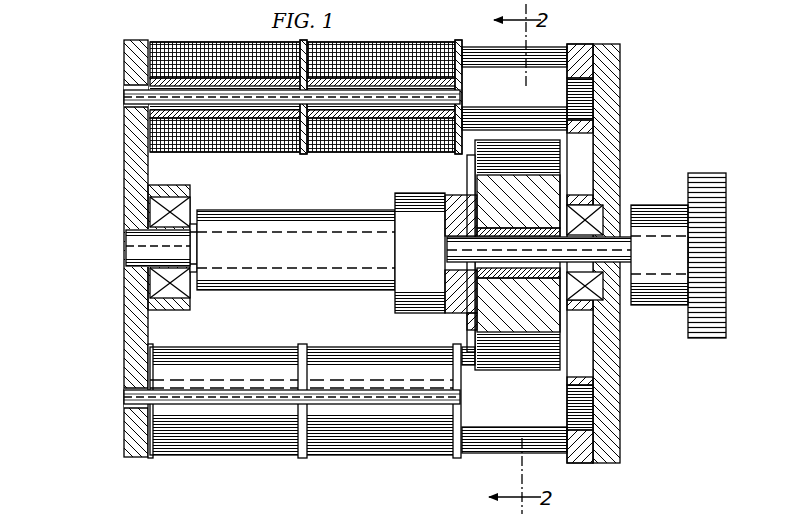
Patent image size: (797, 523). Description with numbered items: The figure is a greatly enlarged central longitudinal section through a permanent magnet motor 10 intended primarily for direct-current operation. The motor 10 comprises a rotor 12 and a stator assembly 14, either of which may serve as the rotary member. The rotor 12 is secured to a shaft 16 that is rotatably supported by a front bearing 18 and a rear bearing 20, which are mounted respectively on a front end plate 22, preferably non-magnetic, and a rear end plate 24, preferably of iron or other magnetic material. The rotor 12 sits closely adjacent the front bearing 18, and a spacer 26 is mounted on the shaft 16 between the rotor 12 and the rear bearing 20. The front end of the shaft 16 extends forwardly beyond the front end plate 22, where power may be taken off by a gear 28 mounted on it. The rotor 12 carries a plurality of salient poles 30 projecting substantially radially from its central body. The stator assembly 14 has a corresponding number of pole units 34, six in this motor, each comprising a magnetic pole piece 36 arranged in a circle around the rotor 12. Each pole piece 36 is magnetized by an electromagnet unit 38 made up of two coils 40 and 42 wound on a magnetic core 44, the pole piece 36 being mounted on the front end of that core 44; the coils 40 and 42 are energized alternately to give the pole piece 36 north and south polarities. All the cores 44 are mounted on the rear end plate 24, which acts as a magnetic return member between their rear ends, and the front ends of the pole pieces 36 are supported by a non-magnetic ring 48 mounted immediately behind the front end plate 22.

The permanent magnet motor 10 is at (74, 38).
The rotor 12 is at (562, 186).
The stator assembly 14 is at (564, 38).
The shaft 16 is at (140, 243).
The front bearing 18 is at (612, 298).
The rear bearing 20 is at (176, 295).
The front end plate 22 is at (610, 352).
The rear end plate 24 is at (133, 317).
The spacer 26 is at (300, 290).
The gear 28 is at (727, 323).
The salient poles 30 is at (538, 155).
The stator pole units 34 is at (583, 94).
The pole piece 36 is at (522, 87).
The electromagnet unit 38 is at (199, 37).
The first coil 40 is at (245, 52).
The second coil 42 is at (390, 52).
The core 44 is at (150, 96).
The non-magnetic ring 48 is at (602, 463).